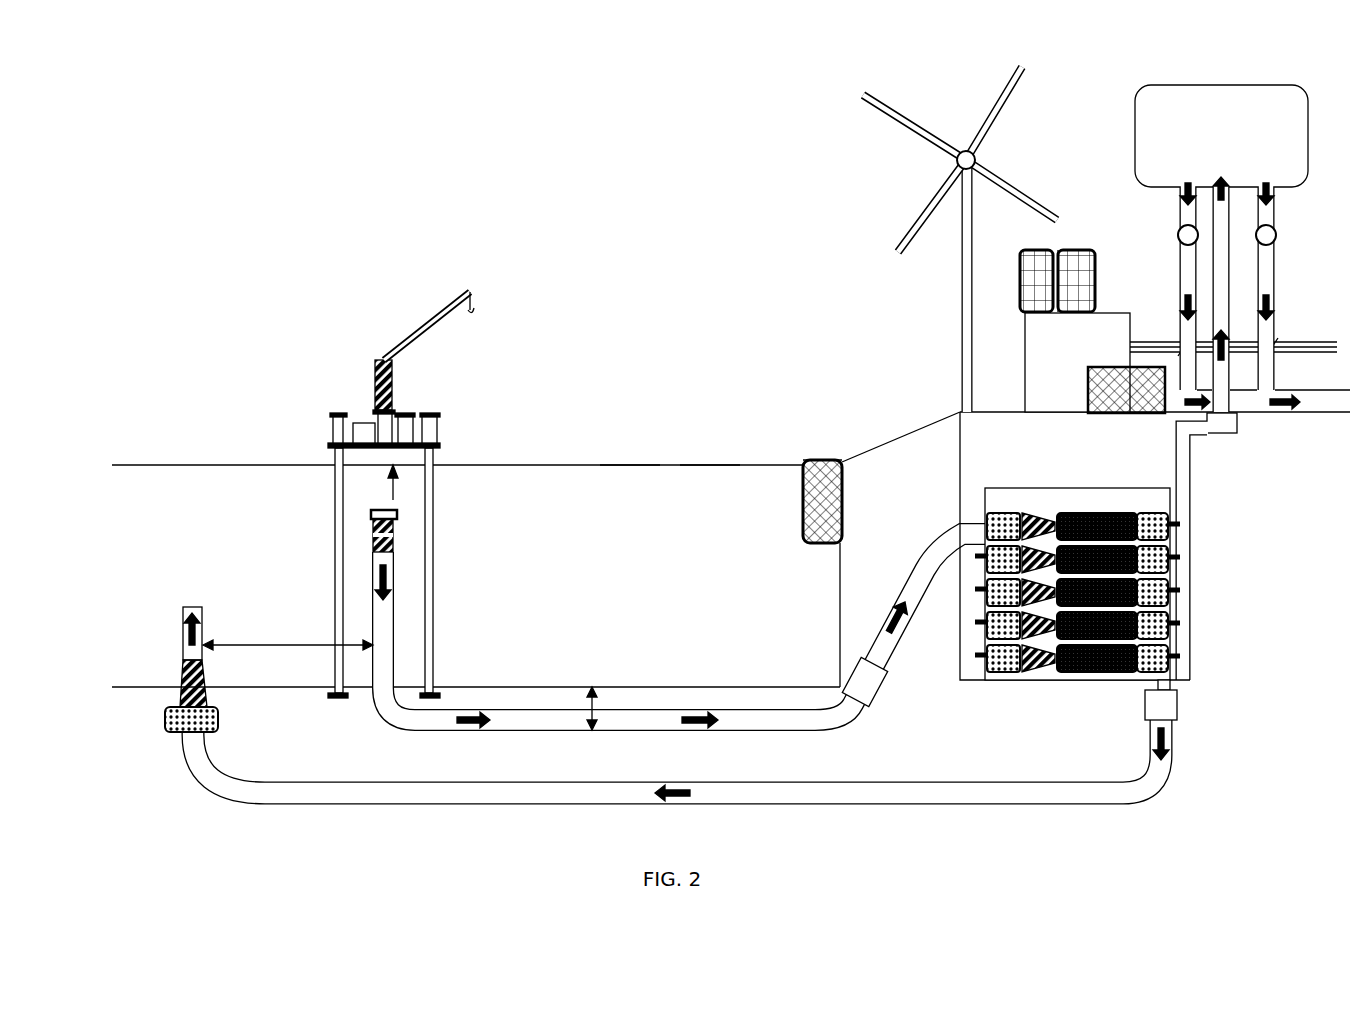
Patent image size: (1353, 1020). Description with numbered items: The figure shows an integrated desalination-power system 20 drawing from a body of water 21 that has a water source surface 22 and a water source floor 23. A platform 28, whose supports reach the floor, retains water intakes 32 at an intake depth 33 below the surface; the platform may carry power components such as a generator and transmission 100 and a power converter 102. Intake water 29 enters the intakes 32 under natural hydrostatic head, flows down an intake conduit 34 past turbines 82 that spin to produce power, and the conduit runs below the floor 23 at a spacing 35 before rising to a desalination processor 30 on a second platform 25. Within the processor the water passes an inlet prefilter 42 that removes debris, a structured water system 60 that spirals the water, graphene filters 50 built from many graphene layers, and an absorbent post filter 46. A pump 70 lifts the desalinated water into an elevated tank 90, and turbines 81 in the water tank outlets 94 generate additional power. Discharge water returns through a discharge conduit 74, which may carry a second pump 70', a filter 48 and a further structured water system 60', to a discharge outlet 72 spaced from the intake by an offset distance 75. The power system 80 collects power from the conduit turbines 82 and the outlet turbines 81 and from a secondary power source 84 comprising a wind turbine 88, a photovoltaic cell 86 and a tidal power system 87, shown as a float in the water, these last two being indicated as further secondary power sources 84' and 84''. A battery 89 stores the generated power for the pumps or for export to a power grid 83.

The body of water 20 is at (670, 571).
The body of water 21 is at (603, 488).
The water source surface 22 is at (563, 460).
The water source floor 23 is at (667, 680).
The platform 25 is at (998, 410).
The platform 28 is at (334, 420).
The intake water 29 is at (680, 490).
The separator assembly 30 is at (1107, 619).
The water intakes 32 is at (393, 496).
The intake depth 33 is at (390, 487).
The intake conduit 34 is at (398, 690).
The pipe height above bottom 35 is at (588, 712).
The prefilter 42 is at (1003, 680).
The post filter 46 is at (1140, 690).
The filter 48 is at (190, 740).
The graphene filters 50 is at (1097, 680).
The structured water system 60 is at (1034, 631).
The discharge nozzle 60' is at (219, 701).
The pump 70 is at (1068, 584).
The second pump 70' is at (1186, 747).
The discharge outlet 72 is at (189, 607).
The discharge conduit 74 is at (313, 805).
The offset distance 75 is at (245, 640).
The power system 80 is at (920, 320).
The turbines 81 is at (1278, 238).
The turbines 82 is at (395, 548).
The power grid 83 is at (1290, 350).
The secondary power source 84 is at (980, 159).
The solar panel 84' is at (1103, 270).
The wave energy converter 84'' is at (845, 441).
The photovoltaic cell 86 is at (1090, 250).
The tidal power system 87 is at (822, 460).
The wind turbine 88 is at (975, 162).
The battery 89 is at (1128, 413).
The tank 90 is at (1215, 130).
The water tank outlets 94 is at (1278, 193).
The generator and transmission 100 is at (412, 412).
The power converter 102 is at (362, 423).